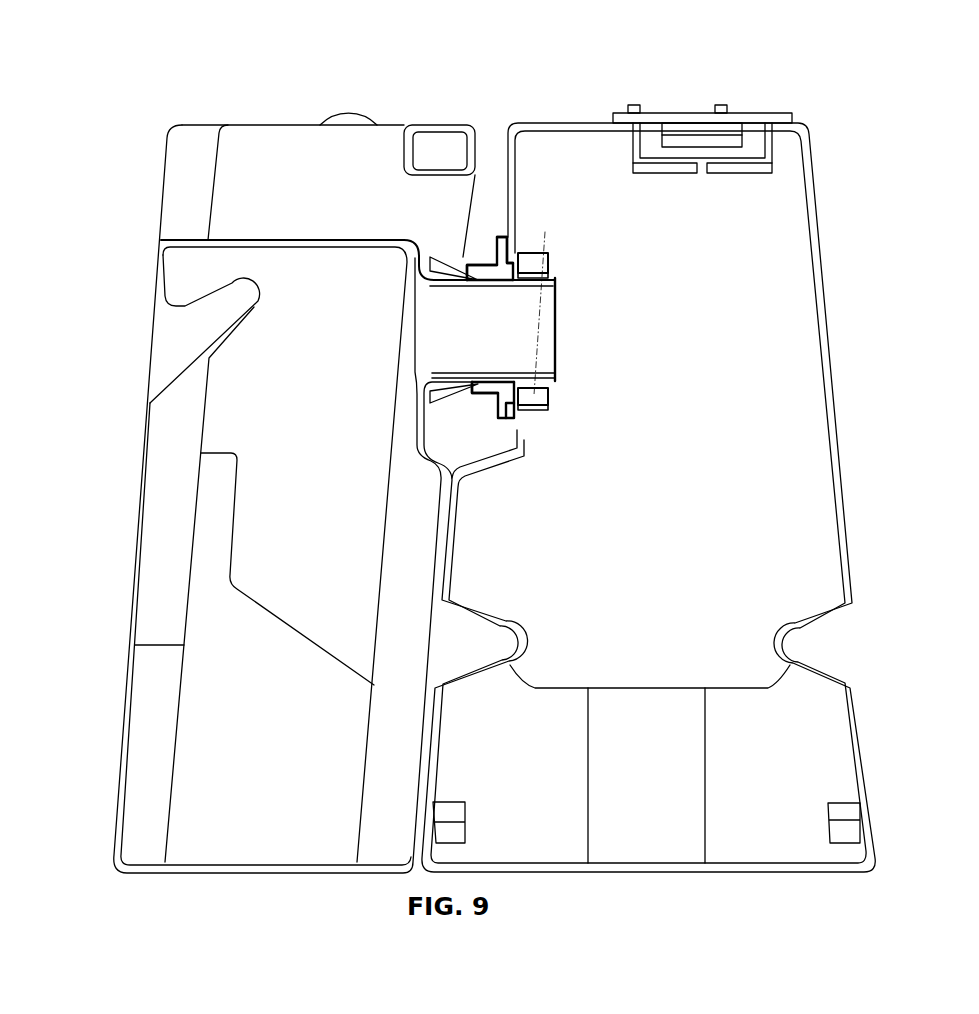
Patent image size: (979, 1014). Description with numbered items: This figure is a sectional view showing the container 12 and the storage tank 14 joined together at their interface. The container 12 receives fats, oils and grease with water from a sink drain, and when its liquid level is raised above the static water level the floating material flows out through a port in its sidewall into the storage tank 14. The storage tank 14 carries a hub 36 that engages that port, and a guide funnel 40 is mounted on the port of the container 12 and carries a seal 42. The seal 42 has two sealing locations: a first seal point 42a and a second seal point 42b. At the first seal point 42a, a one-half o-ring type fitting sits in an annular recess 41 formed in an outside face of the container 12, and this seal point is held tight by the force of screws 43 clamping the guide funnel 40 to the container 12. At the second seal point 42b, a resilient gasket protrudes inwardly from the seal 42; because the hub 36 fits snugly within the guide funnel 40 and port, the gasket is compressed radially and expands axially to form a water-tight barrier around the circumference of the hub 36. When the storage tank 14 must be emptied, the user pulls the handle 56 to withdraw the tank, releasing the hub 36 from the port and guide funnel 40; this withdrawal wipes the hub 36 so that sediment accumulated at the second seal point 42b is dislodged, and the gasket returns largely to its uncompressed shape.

The container 12 is at (836, 108).
The storage tank 14 is at (122, 113).
The hub 36 is at (493, 345).
The guide funnel 40 is at (442, 261).
The annular recess 41 is at (507, 280).
The seal 42 is at (478, 266).
The first seal point 42a is at (518, 263).
The second seal point 42b is at (491, 379).
The screws 43 is at (490, 263).
The handle 56 is at (188, 270).